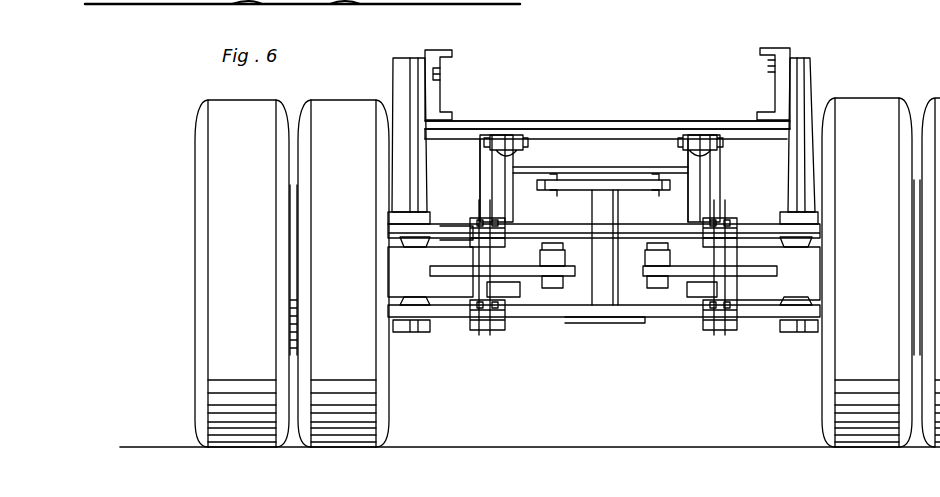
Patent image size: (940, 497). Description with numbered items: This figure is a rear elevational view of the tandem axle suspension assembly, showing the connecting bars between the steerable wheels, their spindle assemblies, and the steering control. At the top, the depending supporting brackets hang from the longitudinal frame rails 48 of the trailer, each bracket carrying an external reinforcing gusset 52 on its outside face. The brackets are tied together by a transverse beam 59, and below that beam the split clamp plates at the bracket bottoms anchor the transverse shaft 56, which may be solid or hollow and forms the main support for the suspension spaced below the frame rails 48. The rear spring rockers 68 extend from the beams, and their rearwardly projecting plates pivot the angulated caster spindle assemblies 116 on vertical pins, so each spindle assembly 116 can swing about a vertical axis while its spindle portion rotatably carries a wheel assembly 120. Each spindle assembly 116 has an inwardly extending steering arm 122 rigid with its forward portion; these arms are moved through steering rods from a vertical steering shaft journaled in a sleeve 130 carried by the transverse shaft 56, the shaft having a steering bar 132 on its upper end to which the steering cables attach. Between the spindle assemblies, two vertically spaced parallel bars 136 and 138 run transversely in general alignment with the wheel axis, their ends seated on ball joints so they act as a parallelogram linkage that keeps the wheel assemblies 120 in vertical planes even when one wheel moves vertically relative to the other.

The longitudinal frame rails 48 is at (771, 52).
The external reinforcing gusset 52 is at (808, 80).
The transverse shaft 56 is at (572, 282).
The transverse beam 59 is at (553, 135).
The rear spring rockers 68 is at (458, 155).
The caster axle or spindle assembly 116 is at (440, 288).
The wheel assemblies 120 is at (872, 105).
The steering arm 122 is at (752, 270).
The sleeve 130 is at (603, 290).
The steering bar 132 is at (580, 178).
The lower transverse bar 136 is at (652, 312).
The upper transverse bar 138 is at (532, 234).